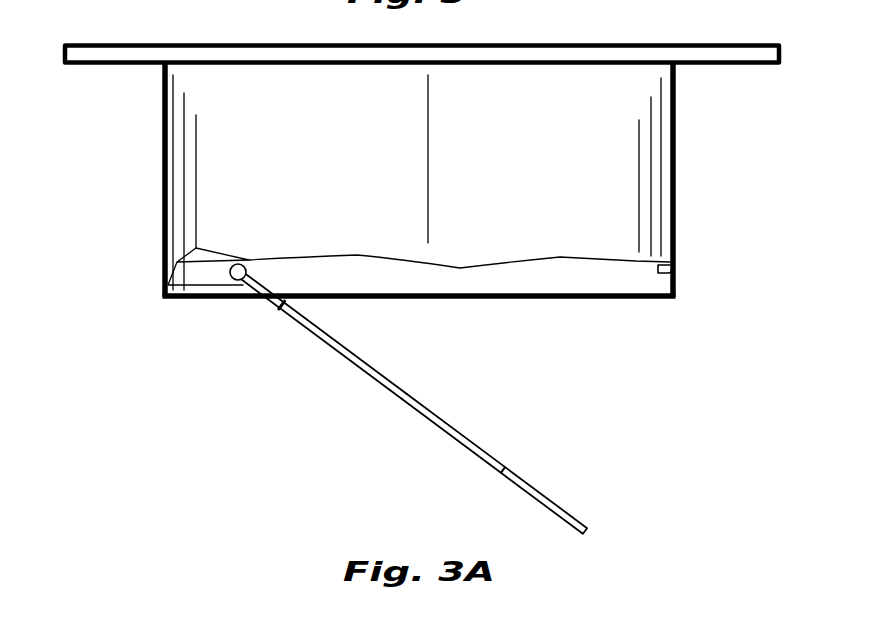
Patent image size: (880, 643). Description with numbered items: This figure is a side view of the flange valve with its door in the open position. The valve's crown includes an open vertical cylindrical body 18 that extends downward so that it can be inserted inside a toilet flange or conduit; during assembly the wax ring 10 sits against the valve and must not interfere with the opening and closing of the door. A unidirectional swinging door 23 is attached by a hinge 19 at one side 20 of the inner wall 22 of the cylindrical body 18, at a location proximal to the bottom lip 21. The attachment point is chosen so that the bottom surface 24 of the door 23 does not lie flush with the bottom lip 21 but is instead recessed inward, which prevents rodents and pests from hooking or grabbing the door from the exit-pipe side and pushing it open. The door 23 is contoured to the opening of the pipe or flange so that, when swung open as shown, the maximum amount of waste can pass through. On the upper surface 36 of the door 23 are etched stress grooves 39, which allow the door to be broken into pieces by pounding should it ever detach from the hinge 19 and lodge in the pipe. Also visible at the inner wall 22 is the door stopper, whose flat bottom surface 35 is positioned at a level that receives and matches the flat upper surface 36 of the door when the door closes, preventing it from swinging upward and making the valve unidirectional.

The wax ring 10 is at (722, 50).
The vertical cylindrical body 18 is at (676, 133).
The hinge 19 is at (232, 281).
The side 20 is at (182, 261).
The bottom lip 21 is at (612, 302).
The inner wall 22 is at (165, 160).
The door 23 is at (468, 451).
The bottom surface of the door 24 is at (348, 373).
The bottom surface of the door stopper 35 is at (672, 277).
The upper surface of the door 36 is at (543, 499).
The stress grooves 39 is at (287, 307).